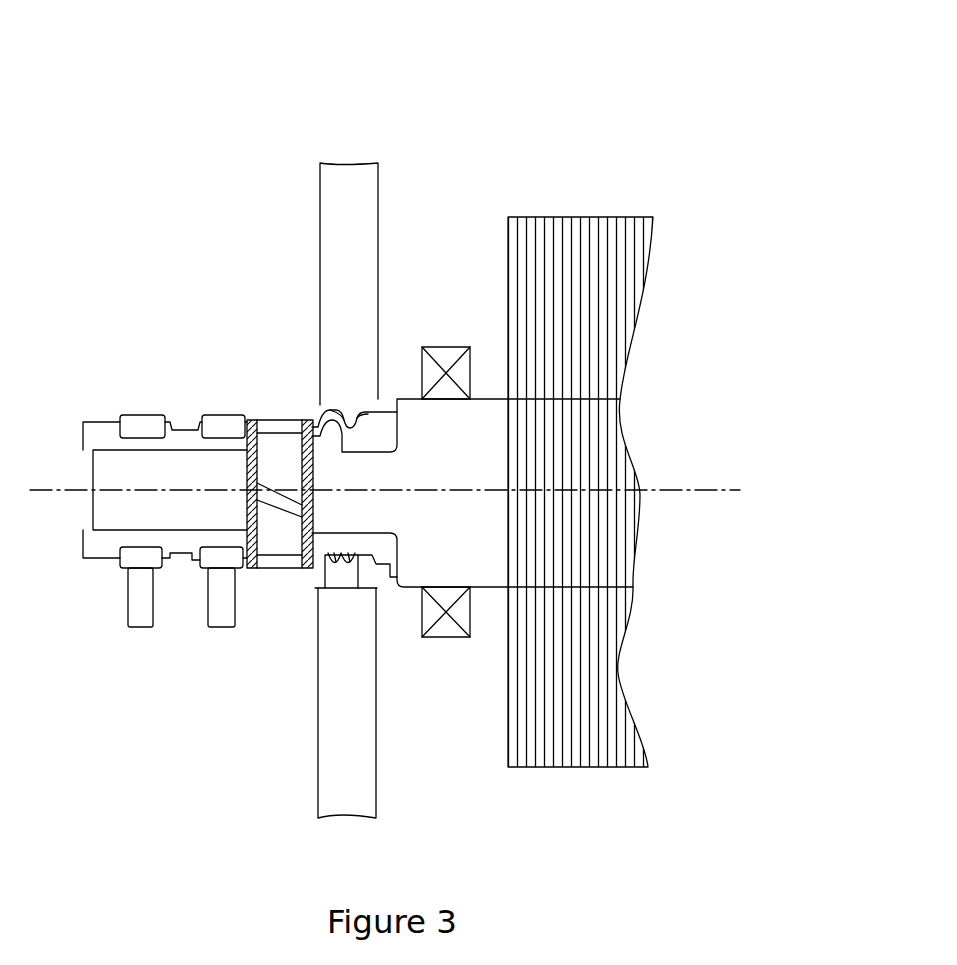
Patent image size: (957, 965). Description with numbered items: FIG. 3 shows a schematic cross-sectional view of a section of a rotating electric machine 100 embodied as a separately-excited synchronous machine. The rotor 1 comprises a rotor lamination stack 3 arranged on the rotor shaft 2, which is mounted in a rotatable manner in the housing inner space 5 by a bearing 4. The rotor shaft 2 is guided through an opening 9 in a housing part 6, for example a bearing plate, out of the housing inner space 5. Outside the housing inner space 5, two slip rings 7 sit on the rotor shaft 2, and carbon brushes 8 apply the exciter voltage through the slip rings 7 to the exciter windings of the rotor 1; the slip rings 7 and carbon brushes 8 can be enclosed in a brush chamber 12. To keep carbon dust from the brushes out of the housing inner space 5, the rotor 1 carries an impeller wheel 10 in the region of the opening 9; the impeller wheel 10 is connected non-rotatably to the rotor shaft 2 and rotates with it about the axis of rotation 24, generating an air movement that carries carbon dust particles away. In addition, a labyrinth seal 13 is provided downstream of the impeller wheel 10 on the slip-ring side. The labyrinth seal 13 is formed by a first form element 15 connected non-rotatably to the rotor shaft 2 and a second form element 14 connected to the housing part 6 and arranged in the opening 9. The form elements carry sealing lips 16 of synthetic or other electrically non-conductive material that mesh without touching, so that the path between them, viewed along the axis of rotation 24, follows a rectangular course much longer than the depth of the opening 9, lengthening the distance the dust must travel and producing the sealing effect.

The electric machine 100 is at (772, 30).
The rotor 1 is at (597, 112).
The rotor shaft 2 is at (96, 473).
The rotor lamination stack 3 is at (623, 680).
The bearing 4 is at (445, 638).
The housing inner space 5 is at (467, 227).
The housing part 6 is at (368, 733).
The slip rings 7 is at (148, 427).
The carbon brushes 8 is at (142, 622).
The opening 9 is at (305, 591).
The impeller wheel 10 is at (262, 467).
The brush chamber 12 is at (197, 228).
The labyrinth seal 13 is at (346, 604).
The second form element 14 is at (353, 403).
The first form element 15 is at (350, 560).
The sealing lips 16 is at (338, 560).
The axis of rotation 24 is at (553, 492).